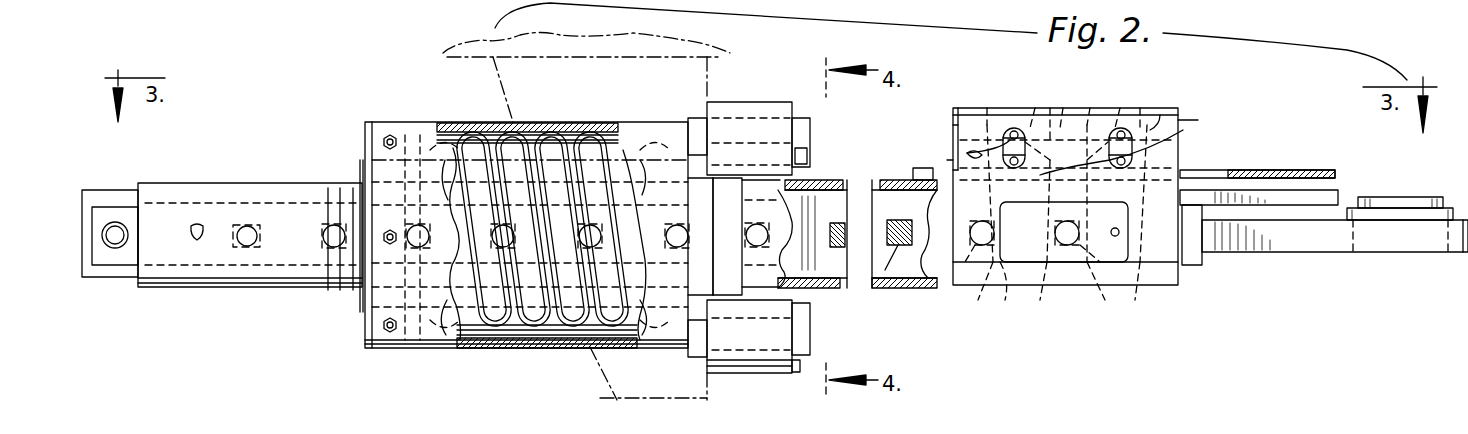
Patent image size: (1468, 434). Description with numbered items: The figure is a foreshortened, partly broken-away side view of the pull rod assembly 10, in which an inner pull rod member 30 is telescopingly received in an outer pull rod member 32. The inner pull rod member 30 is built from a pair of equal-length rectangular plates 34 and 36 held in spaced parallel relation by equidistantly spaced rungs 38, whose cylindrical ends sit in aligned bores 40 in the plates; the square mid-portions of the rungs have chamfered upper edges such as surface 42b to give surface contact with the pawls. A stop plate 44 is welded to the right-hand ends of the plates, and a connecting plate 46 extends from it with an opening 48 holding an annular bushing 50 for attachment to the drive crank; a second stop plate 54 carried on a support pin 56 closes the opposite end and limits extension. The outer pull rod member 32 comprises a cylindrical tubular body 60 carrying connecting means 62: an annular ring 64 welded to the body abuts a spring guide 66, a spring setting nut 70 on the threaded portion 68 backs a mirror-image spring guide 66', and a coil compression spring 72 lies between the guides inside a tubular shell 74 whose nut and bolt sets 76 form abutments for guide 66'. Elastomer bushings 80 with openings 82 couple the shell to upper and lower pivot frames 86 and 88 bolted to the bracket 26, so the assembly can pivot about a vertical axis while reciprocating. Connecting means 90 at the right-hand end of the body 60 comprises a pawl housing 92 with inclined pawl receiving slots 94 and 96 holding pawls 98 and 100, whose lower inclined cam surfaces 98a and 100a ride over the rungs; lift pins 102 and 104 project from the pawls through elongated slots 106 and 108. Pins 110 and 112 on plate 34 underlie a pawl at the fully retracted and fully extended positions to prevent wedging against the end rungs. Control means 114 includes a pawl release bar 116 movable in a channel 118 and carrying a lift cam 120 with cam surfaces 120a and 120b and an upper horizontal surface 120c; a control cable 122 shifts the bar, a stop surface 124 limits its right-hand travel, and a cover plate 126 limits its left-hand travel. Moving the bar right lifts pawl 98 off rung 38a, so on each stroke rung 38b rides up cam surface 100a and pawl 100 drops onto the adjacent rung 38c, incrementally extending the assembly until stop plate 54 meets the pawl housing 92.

The pull rod assembly 10 is at (340, 351).
The bracket 26 is at (490, 62).
The inner pull rod member 30 is at (1277, 254).
The outer pull rod member 32 is at (908, 290).
The elongated rectangular plate 34 is at (118, 263).
The elongated rectangular plate 36 is at (862, 210).
The rungs 38 is at (247, 247).
The rung 38a is at (1072, 262).
The rung 38b is at (983, 262).
The rung 38c is at (895, 270).
The bores 40 is at (970, 262).
The chamfered edge surface 42b is at (838, 222).
The stop plate 44 is at (1197, 268).
The connecting plate 46 is at (1420, 252).
The opening 48 is at (1360, 252).
The annular bearing or bushing 50 is at (1435, 172).
The stop plate 54 is at (86, 192).
The support pin 56 is at (118, 225).
The cylindrical tubular body 60 is at (212, 190).
The connecting means 62 is at (726, 378).
The annular ring 64 is at (730, 298).
The annular spring guide 66 is at (643, 272).
The annular spring guide 66' is at (436, 275).
The threaded portion 68 is at (335, 250).
The spring setting nut 70 is at (362, 158).
The coil compression spring 72 is at (548, 165).
The tubular shell 74 is at (542, 345).
The nut and bolt sets 76 is at (385, 137).
The elastomer bushings 80 is at (810, 138).
The openings 82 is at (762, 125).
The upper pivot frame 86 is at (752, 82).
The lower pivot frame 88 is at (770, 368).
The connecting means 90 is at (1183, 105).
The pawl housing 92 is at (985, 112).
The pawl receiving slot 94 is at (1165, 112).
The pawl receiving slot 96 is at (1050, 110).
The pawl 98 is at (1180, 140).
The lower inclined cam surface 98a is at (1119, 234).
The pawl 100 is at (965, 152).
The lower inclined cam surface 100a is at (1021, 288).
The lift pin 102 is at (1125, 128).
The lift pin 104 is at (1012, 128).
The elongated slot 106 is at (1158, 128).
The elongated slot 108 is at (1016, 130).
The projecting pin 110 is at (1140, 180).
The projecting pin 112 is at (197, 243).
The control means 114 is at (1238, 166).
The pawl release bar 116 is at (1297, 187).
The channel 118 is at (953, 128).
The lift cam 120 is at (1050, 205).
The lift cam surface 120a is at (1108, 103).
The lift cam surface 120b is at (1058, 103).
The upper horizontal surface 120c is at (1090, 108).
The actuator bar or control cable 122 is at (1345, 145).
The stop surface 124 is at (1180, 145).
The cover plate 126 is at (960, 112).